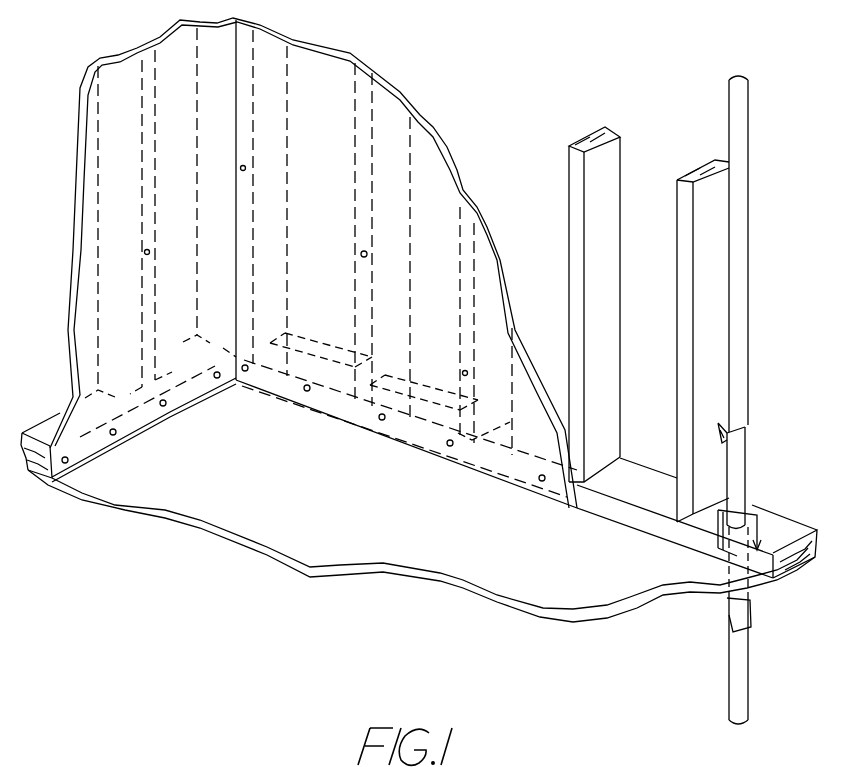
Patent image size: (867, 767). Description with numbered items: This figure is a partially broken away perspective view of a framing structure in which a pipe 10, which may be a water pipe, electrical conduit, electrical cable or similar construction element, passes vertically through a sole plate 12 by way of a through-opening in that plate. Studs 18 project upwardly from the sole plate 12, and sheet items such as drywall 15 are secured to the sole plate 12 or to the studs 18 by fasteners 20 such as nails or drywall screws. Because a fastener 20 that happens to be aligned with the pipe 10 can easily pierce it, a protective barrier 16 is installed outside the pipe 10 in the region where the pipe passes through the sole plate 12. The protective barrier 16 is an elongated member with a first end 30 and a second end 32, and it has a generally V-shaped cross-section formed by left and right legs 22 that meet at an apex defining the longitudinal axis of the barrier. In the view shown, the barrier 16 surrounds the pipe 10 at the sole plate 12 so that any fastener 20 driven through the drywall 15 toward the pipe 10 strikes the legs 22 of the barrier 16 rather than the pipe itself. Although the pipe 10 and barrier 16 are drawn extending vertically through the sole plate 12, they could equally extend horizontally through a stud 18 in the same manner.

The pipe 10 is at (750, 253).
The sole plate 12 is at (777, 528).
The drywall 15 is at (328, 90).
The protective barrier 16 is at (752, 480).
The studs 18 is at (678, 195).
The fasteners 20 is at (364, 257).
The left and right legs 22 is at (740, 457).
The first end 30 is at (737, 427).
The second end 32 is at (742, 637).